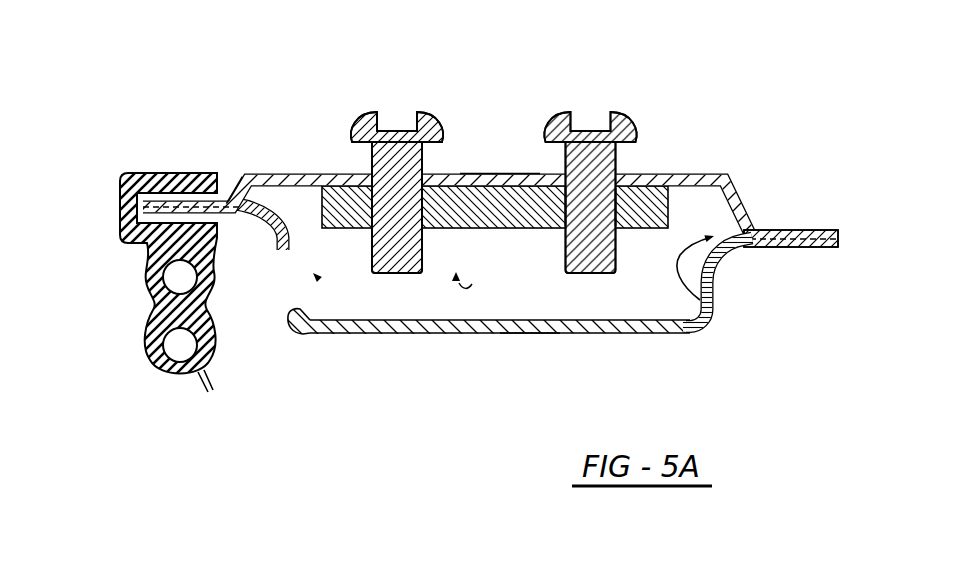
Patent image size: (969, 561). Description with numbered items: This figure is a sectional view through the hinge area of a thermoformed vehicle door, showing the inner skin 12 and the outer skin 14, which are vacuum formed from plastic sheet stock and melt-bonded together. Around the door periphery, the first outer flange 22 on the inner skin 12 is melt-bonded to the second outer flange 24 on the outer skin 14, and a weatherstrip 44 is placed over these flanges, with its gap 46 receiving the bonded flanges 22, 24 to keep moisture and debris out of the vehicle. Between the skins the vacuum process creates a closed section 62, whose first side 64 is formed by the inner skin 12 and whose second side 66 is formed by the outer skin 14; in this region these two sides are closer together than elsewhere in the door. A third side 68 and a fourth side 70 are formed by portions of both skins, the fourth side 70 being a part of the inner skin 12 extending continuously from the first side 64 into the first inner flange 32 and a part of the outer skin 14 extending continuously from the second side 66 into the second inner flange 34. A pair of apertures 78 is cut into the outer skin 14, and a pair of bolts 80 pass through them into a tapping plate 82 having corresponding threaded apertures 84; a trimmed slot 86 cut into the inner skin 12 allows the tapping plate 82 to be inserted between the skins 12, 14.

The inner skin 12 is at (632, 332).
The outer skin 14 is at (300, 173).
The first outer flange 22 is at (238, 218).
The second outer flange 24 is at (233, 178).
The first inner flange 32 is at (812, 250).
The second inner flange 34 is at (812, 234).
The weatherstrip 44 is at (155, 298).
The gap 46 is at (145, 204).
The closed section 62 is at (457, 278).
The first side 64 is at (534, 331).
The second side 66 is at (499, 173).
The third side 68 is at (316, 276).
The fourth side 70 is at (705, 300).
The apertures 78 is at (400, 146).
The bolts 80 is at (436, 130).
The tapping plate 82 is at (482, 204).
The threaded apertures 84 is at (418, 207).
The trimmed slot 86 is at (292, 311).